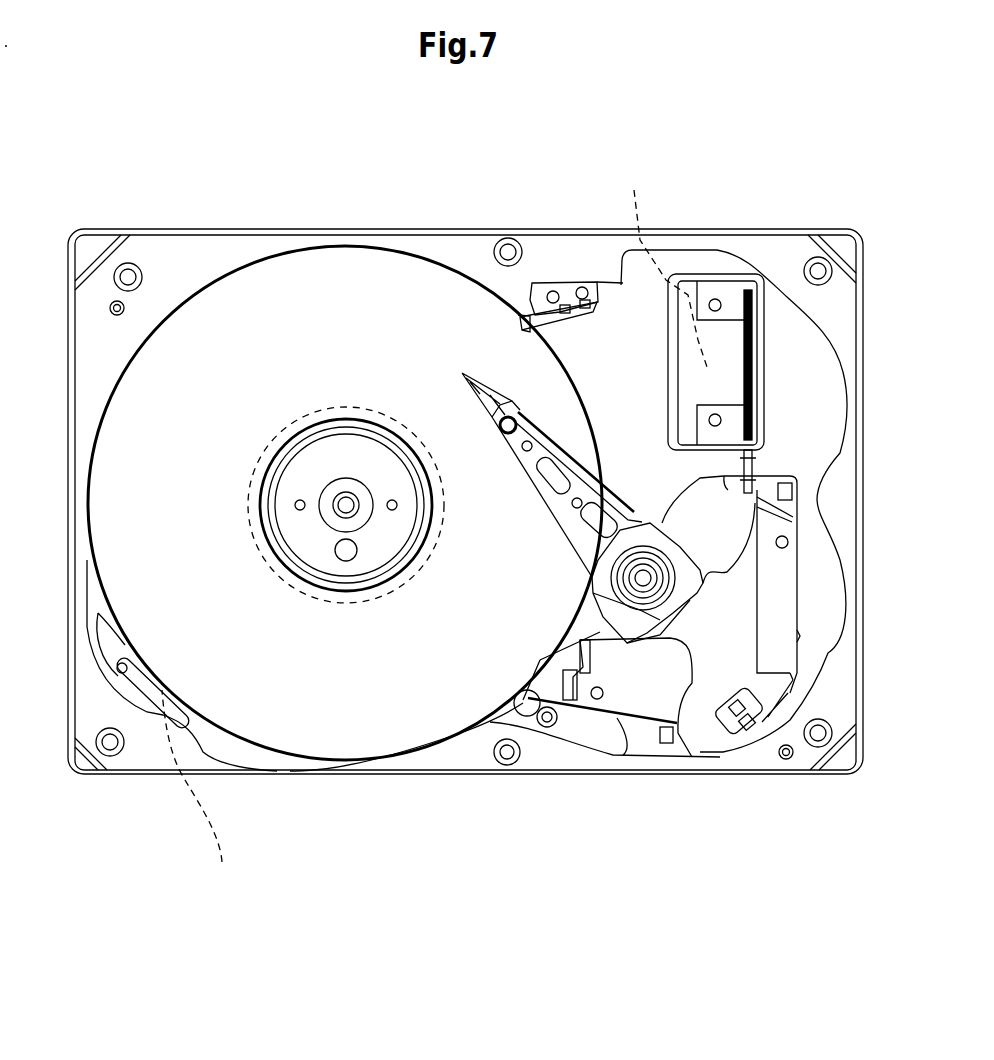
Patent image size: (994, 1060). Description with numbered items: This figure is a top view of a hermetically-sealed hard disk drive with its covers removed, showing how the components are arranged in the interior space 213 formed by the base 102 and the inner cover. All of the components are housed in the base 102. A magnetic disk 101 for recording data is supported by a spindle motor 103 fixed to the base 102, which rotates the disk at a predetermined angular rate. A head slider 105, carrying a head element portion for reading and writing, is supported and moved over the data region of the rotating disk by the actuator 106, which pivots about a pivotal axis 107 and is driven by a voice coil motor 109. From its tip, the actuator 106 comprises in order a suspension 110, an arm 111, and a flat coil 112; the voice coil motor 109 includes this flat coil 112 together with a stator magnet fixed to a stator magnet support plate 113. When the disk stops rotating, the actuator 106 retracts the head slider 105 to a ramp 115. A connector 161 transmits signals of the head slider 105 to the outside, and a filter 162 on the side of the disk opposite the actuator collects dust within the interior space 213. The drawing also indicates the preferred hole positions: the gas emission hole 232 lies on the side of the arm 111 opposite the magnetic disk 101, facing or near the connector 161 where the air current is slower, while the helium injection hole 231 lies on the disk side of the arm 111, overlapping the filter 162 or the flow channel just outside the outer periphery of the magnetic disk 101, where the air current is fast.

The magnetic disk 101 is at (578, 388).
The base 102 is at (409, 777).
The spindle motor 103 is at (322, 600).
The head slider 105 is at (470, 376).
The actuator 106 is at (576, 492).
The pivotal axis 107 is at (590, 583).
The voice coil motor 109 is at (588, 727).
The suspension 110 is at (494, 420).
The arm 111 is at (553, 526).
The flat coil 112 is at (688, 695).
The stator magnet support plate 113 is at (620, 717).
The ramp 115 is at (520, 318).
The connector 161 is at (668, 405).
The filter 162 is at (195, 726).
The interior space 213 is at (789, 409).
The helium injection hole 231 is at (198, 792).
The gas emission hole 232 is at (662, 264).